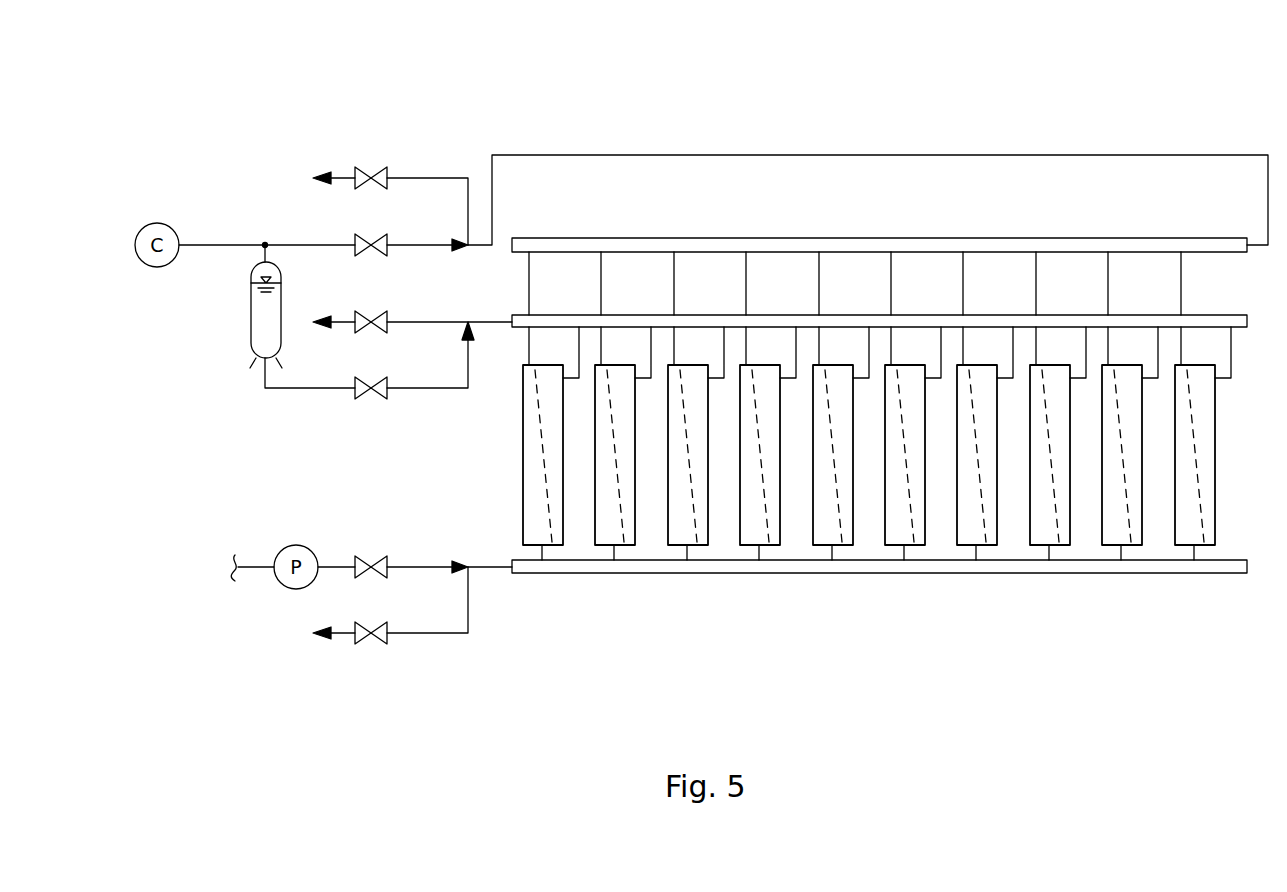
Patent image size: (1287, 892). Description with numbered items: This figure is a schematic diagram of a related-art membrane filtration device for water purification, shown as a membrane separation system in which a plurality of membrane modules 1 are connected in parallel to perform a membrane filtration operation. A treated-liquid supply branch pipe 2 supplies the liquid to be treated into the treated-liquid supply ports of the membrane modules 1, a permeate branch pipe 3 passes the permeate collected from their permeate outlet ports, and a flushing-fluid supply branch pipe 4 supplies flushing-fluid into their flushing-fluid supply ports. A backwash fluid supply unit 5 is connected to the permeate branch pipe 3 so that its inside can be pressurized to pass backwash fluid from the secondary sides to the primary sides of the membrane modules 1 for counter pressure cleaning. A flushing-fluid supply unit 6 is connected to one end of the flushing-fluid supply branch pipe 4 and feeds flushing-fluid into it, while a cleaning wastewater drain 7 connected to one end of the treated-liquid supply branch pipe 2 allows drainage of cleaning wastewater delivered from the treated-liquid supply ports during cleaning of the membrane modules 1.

The membrane modules 1 is at (742, 545).
The treated-liquid supply branch pipe 2 is at (957, 563).
The permeate branch pipe 3 is at (773, 315).
The flushing-fluid supply branch pipe 4 is at (910, 238).
The backwash fluid supply unit 5 is at (236, 343).
The flushing-fluid supply unit 6 is at (264, 214).
The cleaning wastewater drain 7 is at (434, 650).